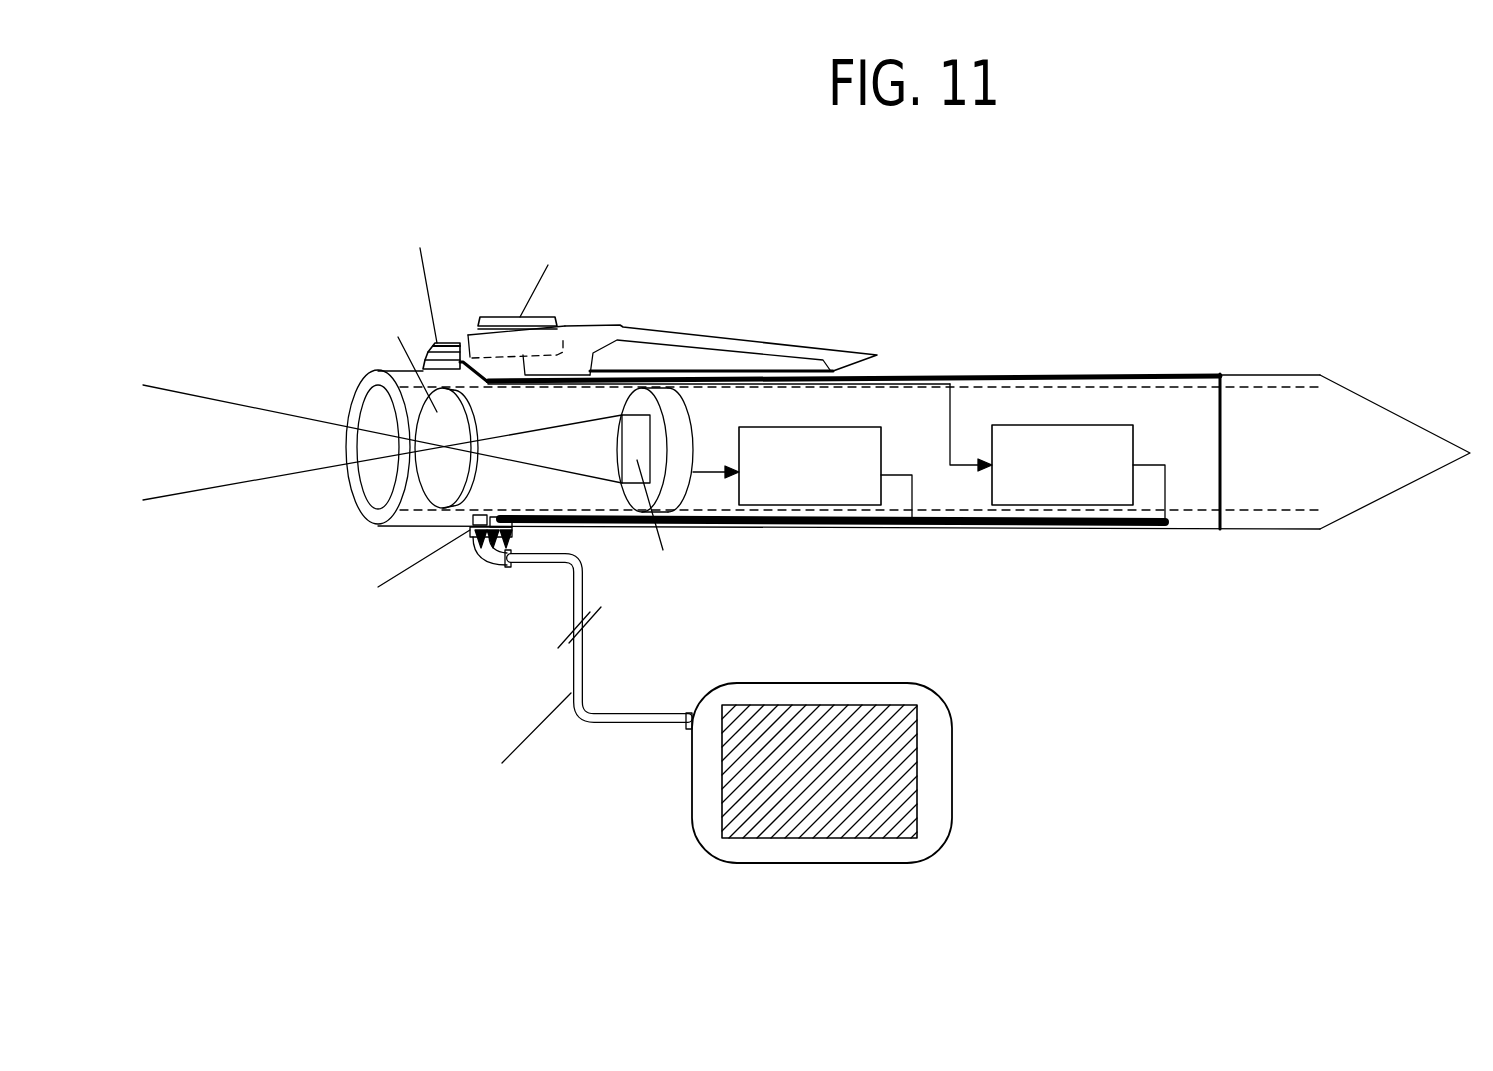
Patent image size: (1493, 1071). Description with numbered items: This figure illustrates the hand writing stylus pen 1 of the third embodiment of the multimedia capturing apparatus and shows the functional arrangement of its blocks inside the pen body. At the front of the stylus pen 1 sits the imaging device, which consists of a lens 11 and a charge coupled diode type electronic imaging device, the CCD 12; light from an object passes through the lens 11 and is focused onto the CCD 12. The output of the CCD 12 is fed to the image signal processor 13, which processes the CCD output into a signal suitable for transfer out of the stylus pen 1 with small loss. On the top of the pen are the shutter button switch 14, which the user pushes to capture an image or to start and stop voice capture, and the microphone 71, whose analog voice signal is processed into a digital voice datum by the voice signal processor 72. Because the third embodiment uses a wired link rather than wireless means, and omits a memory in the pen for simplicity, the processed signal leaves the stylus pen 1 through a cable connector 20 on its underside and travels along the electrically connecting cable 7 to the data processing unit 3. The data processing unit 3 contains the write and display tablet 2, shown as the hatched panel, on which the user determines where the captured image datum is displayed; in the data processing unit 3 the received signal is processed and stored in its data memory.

The hand writing stylus pen 1 is at (1407, 194).
The lens 11 is at (370, 303).
The microphone 71 is at (437, 214).
The shutter button switch 14 is at (662, 235).
The charge coupled diode type electronic imaging device 12 is at (717, 575).
The image signal processor 13 is at (881, 437).
The voice signal processor 72 is at (1135, 438).
The cable connector 20 is at (332, 650).
The electrically connecting cable 7 is at (513, 828).
The write and display tablet 2 is at (984, 773).
The data processing unit 3 is at (952, 740).